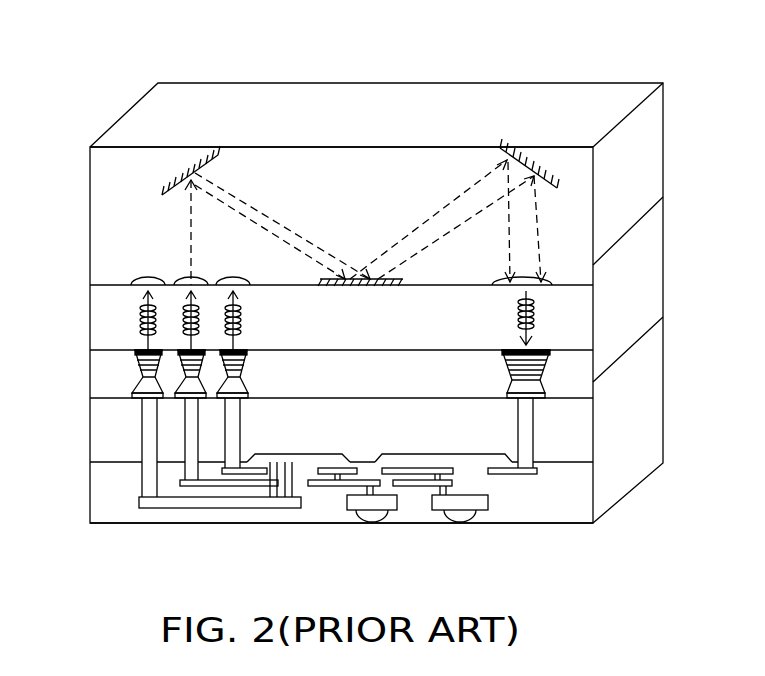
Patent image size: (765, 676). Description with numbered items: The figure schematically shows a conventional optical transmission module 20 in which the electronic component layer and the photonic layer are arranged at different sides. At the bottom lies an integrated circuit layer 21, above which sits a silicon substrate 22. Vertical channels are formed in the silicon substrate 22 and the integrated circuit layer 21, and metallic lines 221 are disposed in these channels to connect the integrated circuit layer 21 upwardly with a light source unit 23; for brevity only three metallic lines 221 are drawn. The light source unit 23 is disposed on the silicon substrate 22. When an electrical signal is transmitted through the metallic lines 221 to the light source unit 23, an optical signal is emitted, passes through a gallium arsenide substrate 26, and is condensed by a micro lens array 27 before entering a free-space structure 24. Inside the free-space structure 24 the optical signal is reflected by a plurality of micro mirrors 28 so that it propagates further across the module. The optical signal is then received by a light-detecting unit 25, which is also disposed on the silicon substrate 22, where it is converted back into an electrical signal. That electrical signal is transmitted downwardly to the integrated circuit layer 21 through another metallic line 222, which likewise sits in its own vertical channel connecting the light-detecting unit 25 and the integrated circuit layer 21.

The optical transmission module 20 is at (490, 70).
The integrated circuit layer 21 is at (319, 512).
The silicon substrate 22 is at (106, 443).
The metallic lines 221 is at (192, 455).
The metallic line 222 is at (527, 433).
The light source unit 23 is at (173, 377).
The free-space structure 24 is at (108, 193).
The light-detecting unit 25 is at (503, 362).
The gallium arsenide substrate 26 is at (105, 337).
The micro lens array 27 is at (190, 284).
The micro mirrors 28 is at (202, 148).